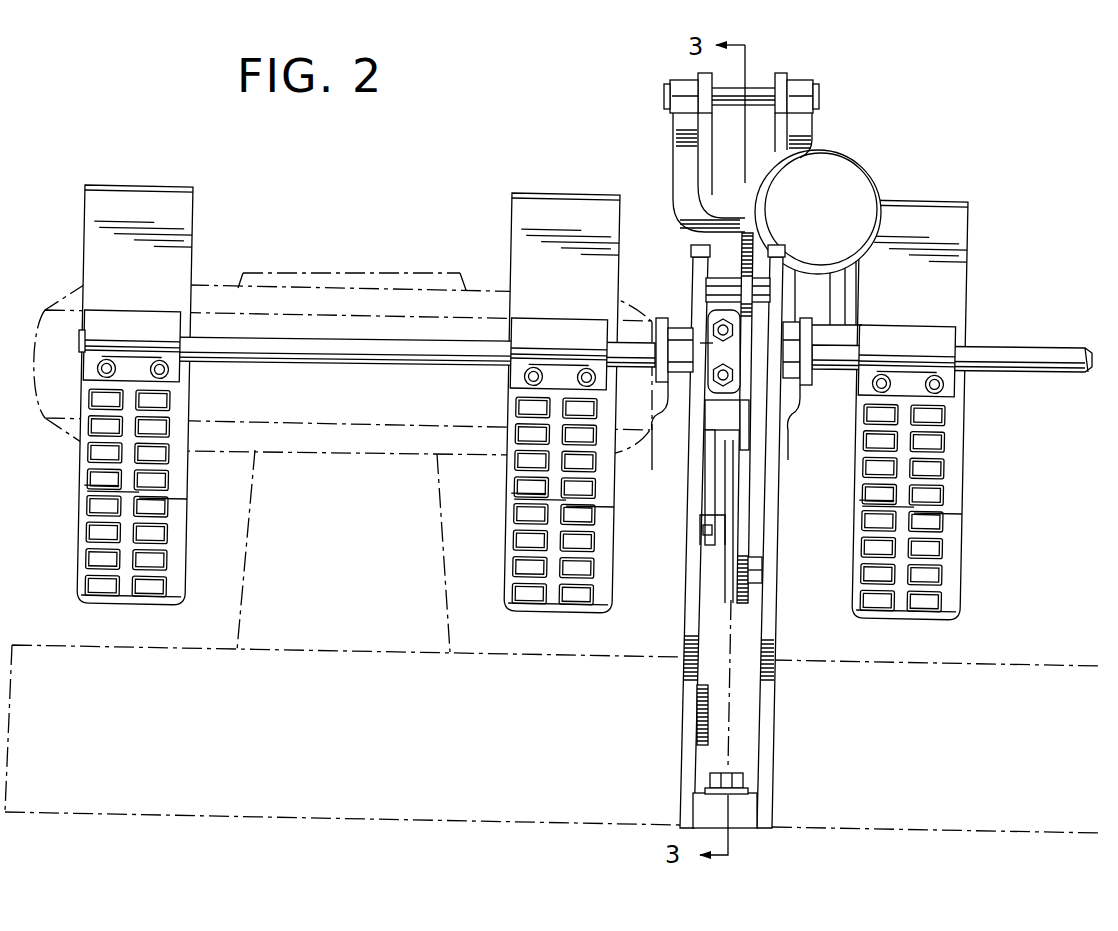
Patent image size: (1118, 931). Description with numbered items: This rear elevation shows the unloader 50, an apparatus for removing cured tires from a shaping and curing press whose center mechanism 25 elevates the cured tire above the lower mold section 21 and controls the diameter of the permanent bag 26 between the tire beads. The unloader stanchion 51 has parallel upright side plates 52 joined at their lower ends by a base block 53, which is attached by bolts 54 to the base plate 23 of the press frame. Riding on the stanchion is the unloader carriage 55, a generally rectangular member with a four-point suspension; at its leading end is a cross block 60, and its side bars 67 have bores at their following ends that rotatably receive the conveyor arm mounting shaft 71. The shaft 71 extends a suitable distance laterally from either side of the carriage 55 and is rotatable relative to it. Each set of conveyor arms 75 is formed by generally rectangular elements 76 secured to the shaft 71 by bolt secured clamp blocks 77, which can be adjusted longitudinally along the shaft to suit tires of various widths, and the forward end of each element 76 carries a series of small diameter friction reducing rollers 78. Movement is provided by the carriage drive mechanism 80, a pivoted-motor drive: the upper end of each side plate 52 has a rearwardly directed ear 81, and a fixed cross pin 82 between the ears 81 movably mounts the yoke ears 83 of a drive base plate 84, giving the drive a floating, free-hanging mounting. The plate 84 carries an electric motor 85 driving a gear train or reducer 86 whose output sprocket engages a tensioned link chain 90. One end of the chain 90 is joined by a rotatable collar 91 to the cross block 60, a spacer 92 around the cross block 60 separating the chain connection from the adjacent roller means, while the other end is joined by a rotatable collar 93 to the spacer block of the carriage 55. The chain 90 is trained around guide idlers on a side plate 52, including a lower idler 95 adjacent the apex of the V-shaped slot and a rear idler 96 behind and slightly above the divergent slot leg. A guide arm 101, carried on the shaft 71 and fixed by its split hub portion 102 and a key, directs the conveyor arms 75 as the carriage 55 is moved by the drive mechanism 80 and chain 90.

The lower mold section 21 is at (85, 672).
The base plate 23 is at (282, 817).
The center mechanism 25 is at (270, 578).
The permanent bag 26 is at (420, 585).
The unloader 50 is at (636, 162).
The unloader stanchion 51 is at (680, 640).
The side plates 52 is at (690, 712).
The base block 53 is at (745, 813).
The bolts 54 is at (745, 783).
The unloader carriage 55 is at (681, 322).
The cross block 60 is at (715, 437).
The side bars 67 is at (673, 428).
The mounting shaft 71 is at (990, 351).
The conveyor arms 75 is at (339, 255).
The rectangular elements 76 is at (192, 220).
The clamp blocks 77 is at (117, 320).
The friction reducing rollers 78 is at (160, 538).
The carriage drive mechanism 80 is at (860, 148).
The ear 81 is at (713, 78).
The cross pin 82 is at (733, 100).
The yoke ears 83 is at (683, 80).
The drive base plate 84 is at (693, 216).
The electric motor 85 is at (860, 176).
The gear train or reducer 86 is at (835, 335).
The power transmission chain 90 is at (754, 531).
The rotatable collar 91 is at (749, 430).
The spacer 92 is at (760, 408).
The rotatable collar 93 is at (722, 351).
The lower idler 95 is at (755, 588).
The rear idler 96 is at (708, 272).
The guide arm 101 is at (722, 503).
The split hub portion 102 is at (712, 345).